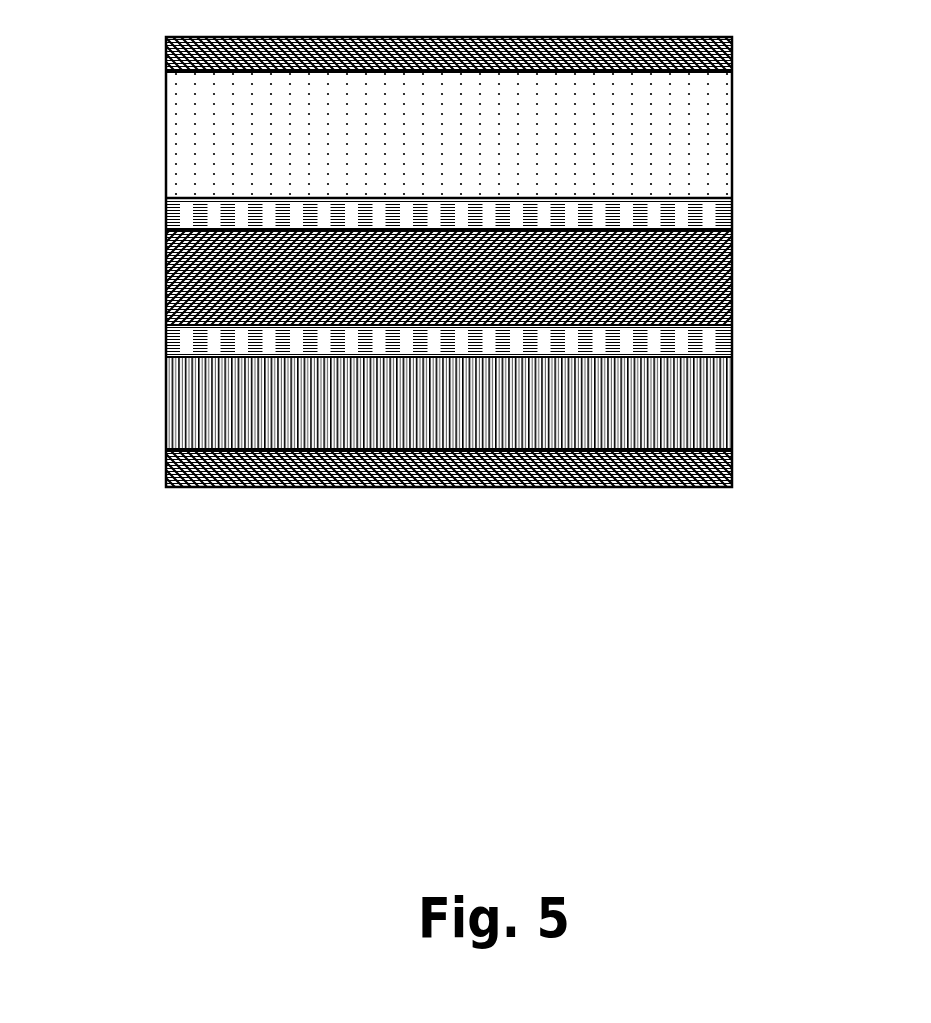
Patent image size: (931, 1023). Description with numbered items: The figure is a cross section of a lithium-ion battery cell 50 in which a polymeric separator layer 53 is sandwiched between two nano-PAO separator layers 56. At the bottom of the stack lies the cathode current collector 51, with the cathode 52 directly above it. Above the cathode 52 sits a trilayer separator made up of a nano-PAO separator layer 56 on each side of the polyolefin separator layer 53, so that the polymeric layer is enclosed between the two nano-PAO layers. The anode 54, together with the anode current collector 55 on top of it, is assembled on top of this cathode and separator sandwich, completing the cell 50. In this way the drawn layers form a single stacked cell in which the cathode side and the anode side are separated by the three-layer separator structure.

The lithium-ion battery cell 50 is at (450, 365).
The cathode current collector 51 is at (213, 470).
The cathode 52 is at (183, 388).
The polymeric separator layer 53 is at (717, 297).
The anode 54 is at (190, 138).
The anode current collector 55 is at (723, 52).
The nano-PAO separator layer 56 is at (732, 213).